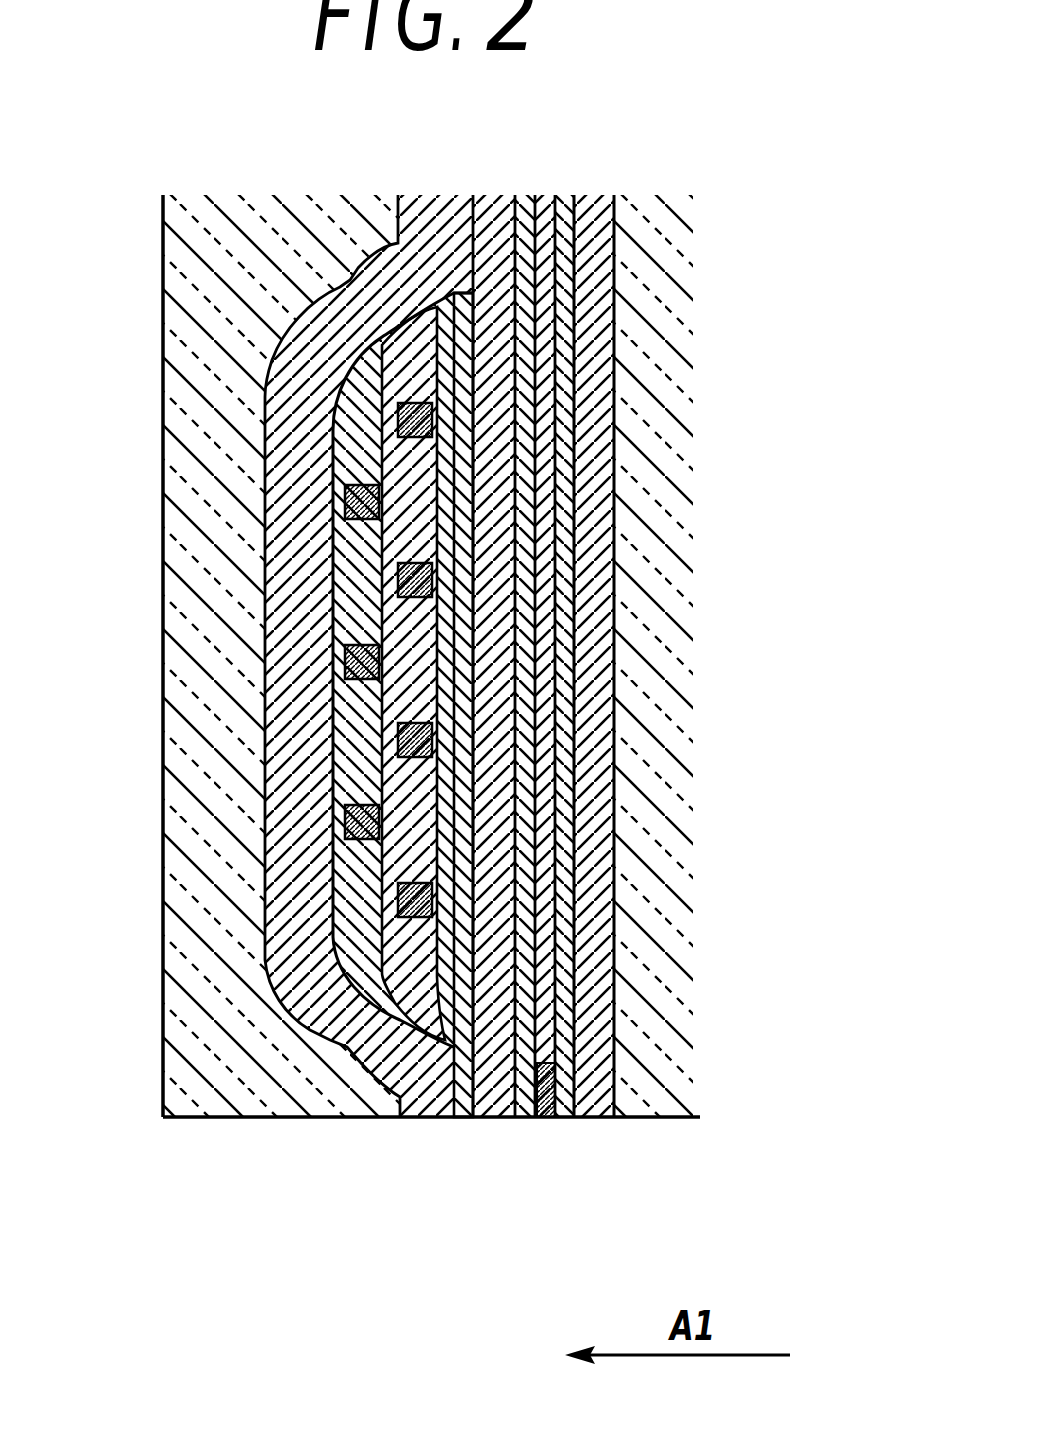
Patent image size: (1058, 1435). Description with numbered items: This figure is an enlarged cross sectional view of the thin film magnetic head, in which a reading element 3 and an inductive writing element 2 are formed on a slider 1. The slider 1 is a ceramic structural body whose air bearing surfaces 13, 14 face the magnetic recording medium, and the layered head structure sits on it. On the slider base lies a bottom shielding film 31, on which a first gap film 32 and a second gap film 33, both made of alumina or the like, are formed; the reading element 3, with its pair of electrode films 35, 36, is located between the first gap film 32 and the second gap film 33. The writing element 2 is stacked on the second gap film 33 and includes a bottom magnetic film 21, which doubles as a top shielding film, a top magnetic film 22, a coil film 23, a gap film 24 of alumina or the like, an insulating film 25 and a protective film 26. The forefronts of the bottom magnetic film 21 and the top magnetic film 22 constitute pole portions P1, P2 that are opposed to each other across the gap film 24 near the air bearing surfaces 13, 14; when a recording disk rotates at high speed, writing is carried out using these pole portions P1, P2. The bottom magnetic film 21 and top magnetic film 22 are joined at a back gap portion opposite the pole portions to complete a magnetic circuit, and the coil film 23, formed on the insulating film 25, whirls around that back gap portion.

The slider 1 is at (658, 283).
The writing element 2 is at (212, 1046).
The reading element 3 is at (557, 1090).
The air bearing surface 13 is at (529, 1179).
The air bearing surface 14 is at (650, 1150).
The bottom magnetic film 21 is at (500, 660).
The top magnetic film 22 is at (290, 915).
The coil film 23 is at (420, 745).
The gap film 24 is at (466, 572).
The insulating film 25 is at (362, 543).
The protective film 26 is at (202, 266).
The bottom shielding film 31 is at (595, 382).
The first gap film 32 is at (567, 923).
The second gap film 33 is at (525, 992).
The electrode film 35 is at (728, 656).
The electrode film 36 is at (574, 833).
The pole portion P1 is at (498, 1120).
The pole portion P2 is at (425, 1120).